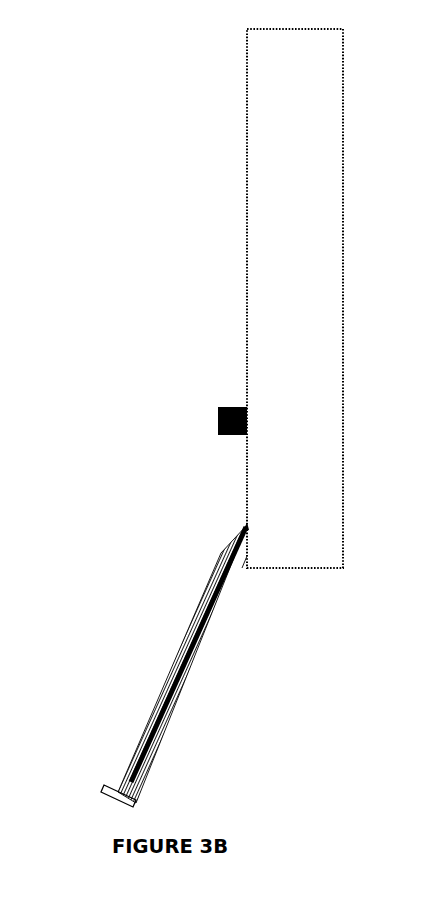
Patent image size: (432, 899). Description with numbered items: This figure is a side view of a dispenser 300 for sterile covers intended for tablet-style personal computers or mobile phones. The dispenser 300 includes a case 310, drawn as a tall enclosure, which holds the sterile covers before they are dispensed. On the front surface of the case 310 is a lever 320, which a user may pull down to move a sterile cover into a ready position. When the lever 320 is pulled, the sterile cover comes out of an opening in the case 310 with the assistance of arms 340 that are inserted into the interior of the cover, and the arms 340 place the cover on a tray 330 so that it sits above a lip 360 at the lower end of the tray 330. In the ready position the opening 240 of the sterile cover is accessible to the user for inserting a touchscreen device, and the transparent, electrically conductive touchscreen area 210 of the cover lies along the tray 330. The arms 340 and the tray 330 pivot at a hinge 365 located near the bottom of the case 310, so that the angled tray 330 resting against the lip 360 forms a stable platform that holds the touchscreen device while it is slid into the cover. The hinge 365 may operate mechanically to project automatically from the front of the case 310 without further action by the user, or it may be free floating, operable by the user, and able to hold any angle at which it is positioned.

The dispenser 300 is at (155, 202).
The case 310 is at (306, 215).
The lever 320 is at (218, 423).
The hinge 365 is at (243, 522).
The opening 240 is at (242, 566).
The touchscreen area 210 is at (225, 574).
The arms 340 is at (188, 642).
The tray 330 is at (178, 715).
The lip 360 is at (104, 787).